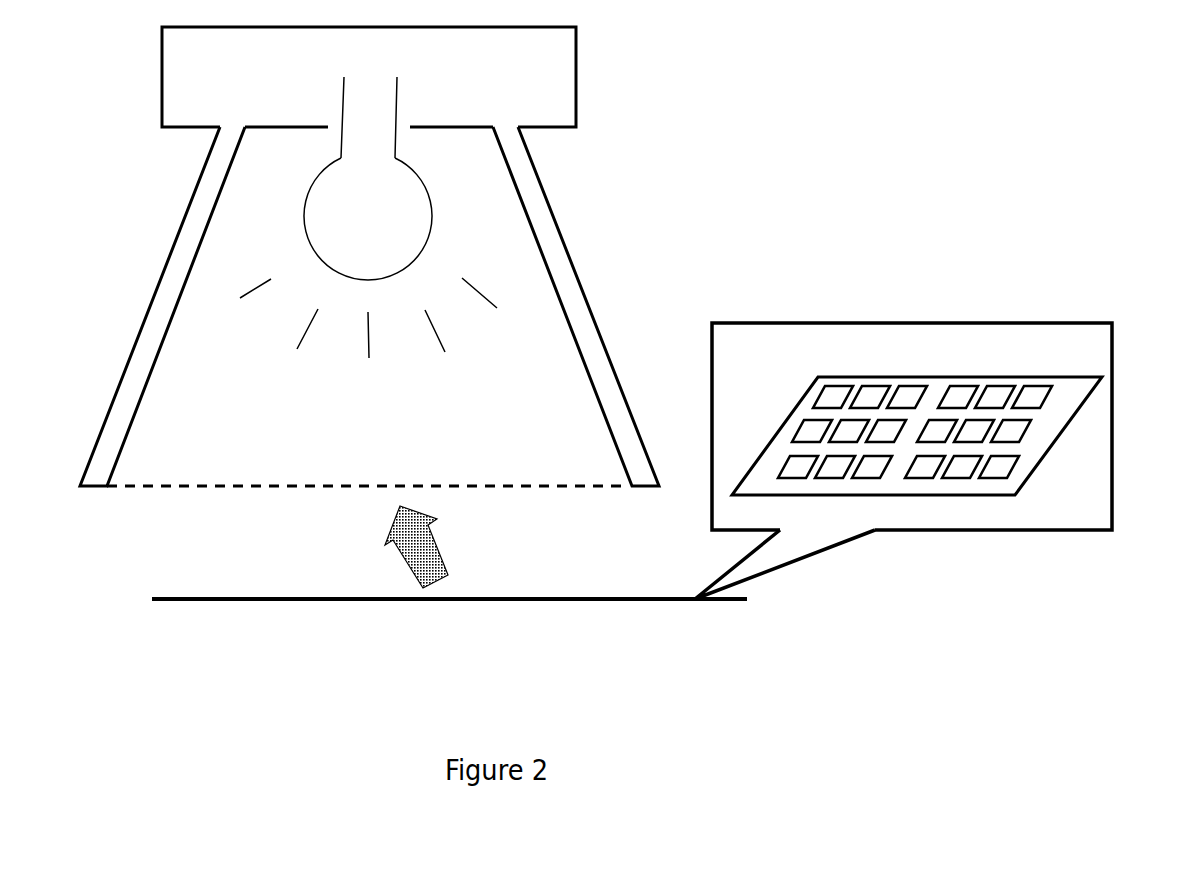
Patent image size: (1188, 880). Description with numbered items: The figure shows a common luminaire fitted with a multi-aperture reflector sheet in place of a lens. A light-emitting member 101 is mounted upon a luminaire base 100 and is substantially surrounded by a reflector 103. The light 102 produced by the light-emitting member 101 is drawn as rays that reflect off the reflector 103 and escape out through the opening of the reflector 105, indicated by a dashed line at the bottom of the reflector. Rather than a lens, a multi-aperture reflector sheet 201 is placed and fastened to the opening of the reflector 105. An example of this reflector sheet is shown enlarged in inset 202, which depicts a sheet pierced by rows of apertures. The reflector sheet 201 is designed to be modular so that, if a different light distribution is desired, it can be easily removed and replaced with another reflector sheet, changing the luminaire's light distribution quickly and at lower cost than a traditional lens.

The luminaire base 100 is at (537, 77).
The light-emitting member 101 is at (373, 217).
The light 102 is at (373, 342).
The reflector 103 is at (538, 212).
The opening of the reflector 105 is at (210, 487).
The multi-aperture reflector sheet 201 is at (480, 630).
The inset 202 is at (950, 518).